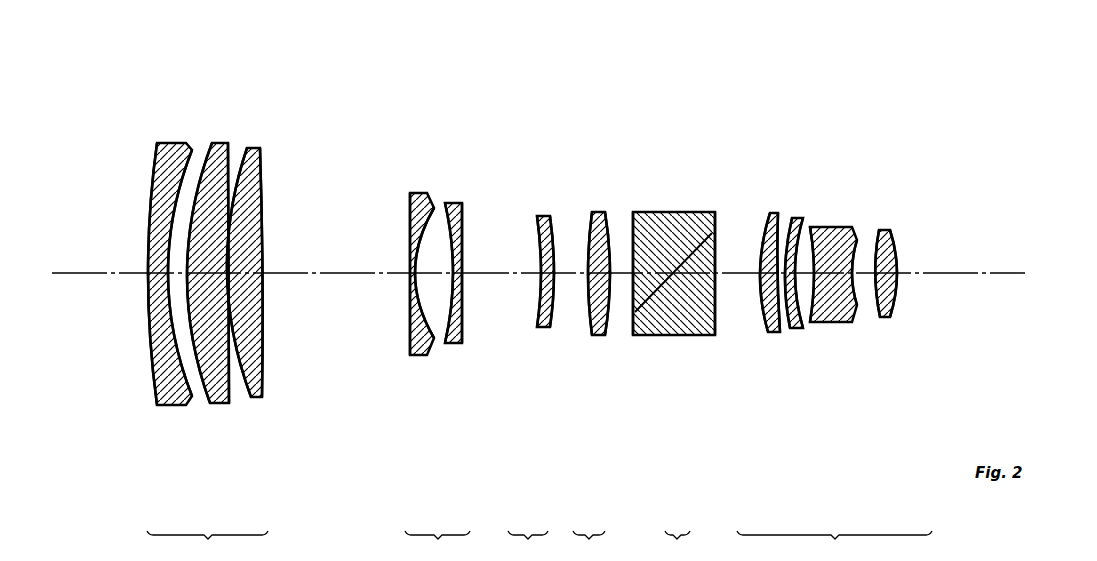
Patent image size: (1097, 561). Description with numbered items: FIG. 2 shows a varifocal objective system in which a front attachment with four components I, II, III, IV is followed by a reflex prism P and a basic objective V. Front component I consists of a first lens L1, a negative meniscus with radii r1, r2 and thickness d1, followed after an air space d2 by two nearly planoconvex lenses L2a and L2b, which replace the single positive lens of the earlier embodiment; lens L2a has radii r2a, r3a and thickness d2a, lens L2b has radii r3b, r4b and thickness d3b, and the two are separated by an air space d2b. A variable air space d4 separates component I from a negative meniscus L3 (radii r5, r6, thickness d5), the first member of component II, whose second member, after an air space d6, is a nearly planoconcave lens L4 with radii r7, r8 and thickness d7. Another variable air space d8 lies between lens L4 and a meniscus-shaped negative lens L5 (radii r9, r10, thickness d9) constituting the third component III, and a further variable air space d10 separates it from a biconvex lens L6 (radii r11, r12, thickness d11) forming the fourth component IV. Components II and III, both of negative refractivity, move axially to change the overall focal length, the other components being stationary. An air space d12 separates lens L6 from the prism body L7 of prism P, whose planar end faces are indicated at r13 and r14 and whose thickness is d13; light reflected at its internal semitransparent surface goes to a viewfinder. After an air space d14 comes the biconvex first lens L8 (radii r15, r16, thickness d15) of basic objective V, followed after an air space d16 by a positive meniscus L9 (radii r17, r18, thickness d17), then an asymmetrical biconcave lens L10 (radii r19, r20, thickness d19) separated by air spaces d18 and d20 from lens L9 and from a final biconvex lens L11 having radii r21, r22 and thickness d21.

The front radius of lens L1 r1 is at (155, 183).
The rear radius of lens L1 r2 is at (175, 247).
The front radius of lens L2a r2a is at (207, 172).
The rear radius of lens L2a r3a is at (229, 160).
The front radius of lens L2b r3b is at (252, 150).
The rear radius of lens L2b r4b is at (263, 178).
The front radius of lens L3 r5 is at (410, 233).
The rear radius of lens L3 r6 is at (418, 193).
The front radius of lens L4 r7 is at (453, 226).
The rear radius of lens L4 r8 is at (462, 228).
The front radius of lens L5 r9 is at (538, 248).
The rear radius of lens L5 r10 is at (553, 250).
The front radius of lens L6 r11 is at (592, 212).
The rear radius of lens L6 r12 is at (607, 215).
The front end face of prism body r13 is at (654, 212).
The rear end face of prism body r14 is at (683, 212).
The front radius of lens L8 r15 is at (763, 220).
The rear radius of lens L8 r16 is at (781, 214).
The front radius of lens L9 r17 is at (788, 218).
The rear radius of lens L9 r18 is at (800, 216).
The front radius of lens L10 r19 is at (815, 225).
The rear radius of lens L10 r20 is at (851, 226).
The front radius of lens L11 r21 is at (876, 230).
The rear radius of lens L11 r22 is at (898, 235).
The thickness of lens L1 d1 is at (158, 405).
The air space between L1 and L2a d2 is at (181, 405).
The thickness of lens L2a d2a is at (210, 403).
The air space between L2a and L2b d2b is at (228, 405).
The thickness of lens L2b d3b is at (246, 399).
The variable air space between components I and II d4 is at (341, 273).
The thickness of lens L3 d5 is at (413, 355).
The air space between L3 and L4 d6 is at (438, 273).
The thickness of lens L4 d7 is at (455, 343).
The variable air space between L4 and L5 d8 is at (508, 273).
The thickness of lens L5 d9 is at (546, 327).
The variable air space between components III and IV d10 is at (573, 273).
The thickness of lens L6 d11 is at (600, 335).
The air space between L6 and prism body d12 is at (623, 273).
The thickness of prism body d13 is at (677, 335).
The air space between prism body and L8 d14 is at (738, 273).
The thickness of lens L8 d15 is at (768, 332).
The air space between L8 and L9 d16 is at (781, 320).
The thickness of lens L9 d17 is at (793, 328).
The air space between L9 and L10 d18 is at (808, 323).
The thickness of lens L10 d19 is at (843, 322).
The air space between L10 and L11 d20 is at (868, 318).
The thickness of lens L11 d21 is at (890, 318).
The first lens L1 is at (169, 336).
The nearly planoconvex lens L2a is at (208, 336).
The nearly planoconvex lens L2b is at (255, 339).
The negative meniscus L3 is at (418, 361).
The nearly planoconcave lens L4 is at (460, 366).
The negative lens L5 is at (537, 373).
The biconvex lens L6 is at (593, 371).
The prism body L7 is at (674, 371).
The biconvex first lens L8 is at (759, 371).
The positive meniscus L9 is at (796, 374).
The asymmetrical biconcave lens L10 is at (851, 378).
The final lens L11 is at (913, 380).
The front component I is at (207, 546).
The second component II is at (437, 546).
The third component III is at (528, 546).
The fourth component IV is at (589, 546).
The reflex prism P is at (677, 546).
The basic objective V is at (834, 546).